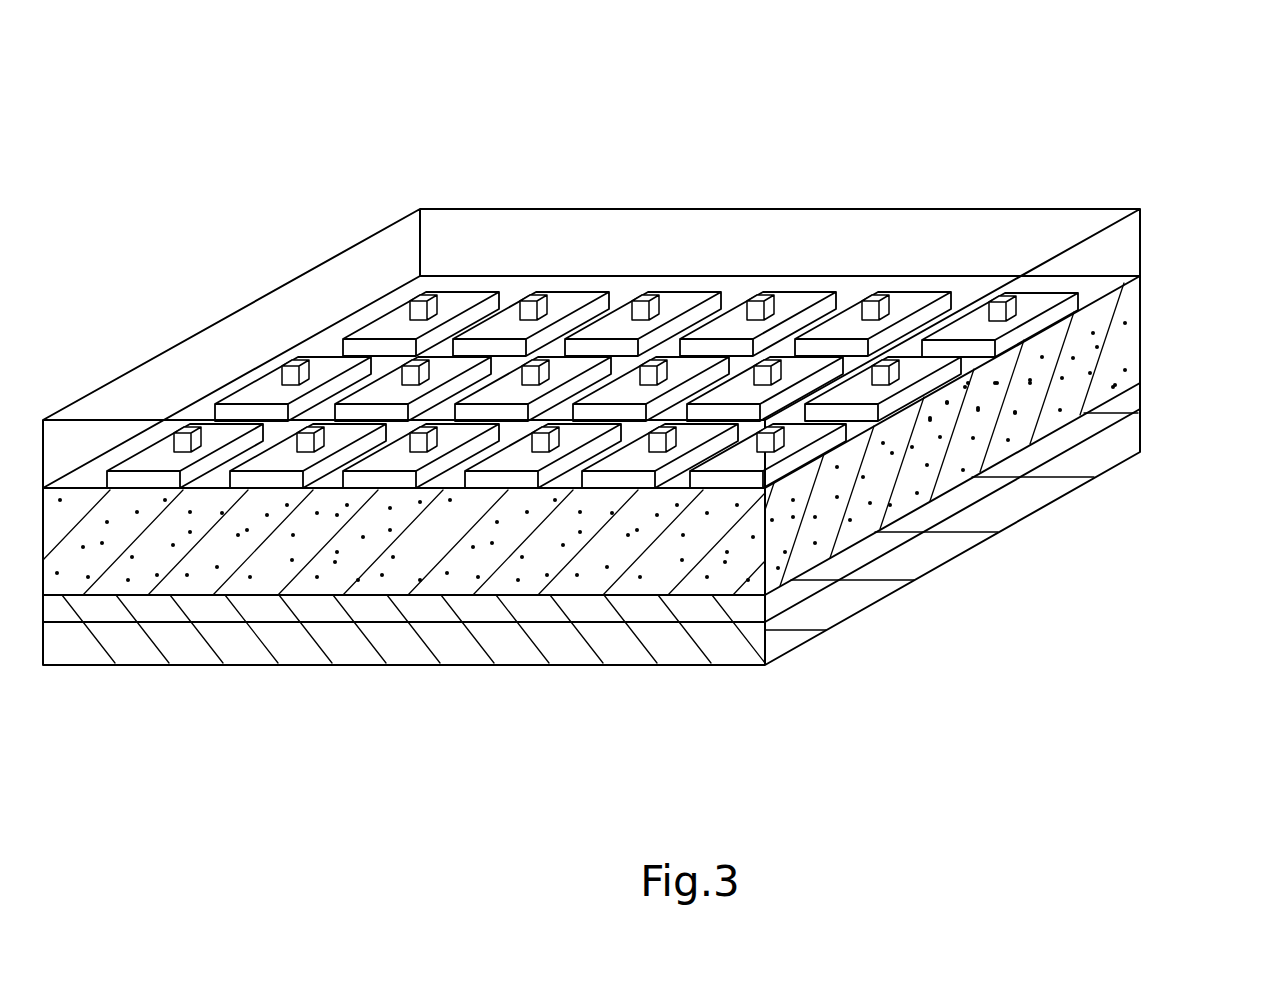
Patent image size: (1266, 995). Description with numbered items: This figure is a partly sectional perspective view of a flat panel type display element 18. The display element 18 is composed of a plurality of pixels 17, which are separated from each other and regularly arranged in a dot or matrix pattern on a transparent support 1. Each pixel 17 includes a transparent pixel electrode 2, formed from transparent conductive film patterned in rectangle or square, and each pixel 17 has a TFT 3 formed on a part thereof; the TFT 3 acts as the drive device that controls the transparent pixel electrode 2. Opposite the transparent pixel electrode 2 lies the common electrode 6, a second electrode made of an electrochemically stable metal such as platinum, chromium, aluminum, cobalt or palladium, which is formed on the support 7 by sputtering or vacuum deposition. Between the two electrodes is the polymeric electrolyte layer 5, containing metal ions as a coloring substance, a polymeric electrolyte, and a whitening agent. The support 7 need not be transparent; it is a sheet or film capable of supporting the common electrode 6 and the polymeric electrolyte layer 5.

The display element 18 is at (1123, 175).
The transparent support 1 is at (957, 226).
The transparent pixel electrode 2 is at (1037, 300).
The TFT 3 is at (652, 291).
The pixel 17 is at (471, 276).
The polymeric electrolyte layer 5 is at (923, 483).
The common electrode 6 is at (832, 567).
The support 7 is at (626, 650).